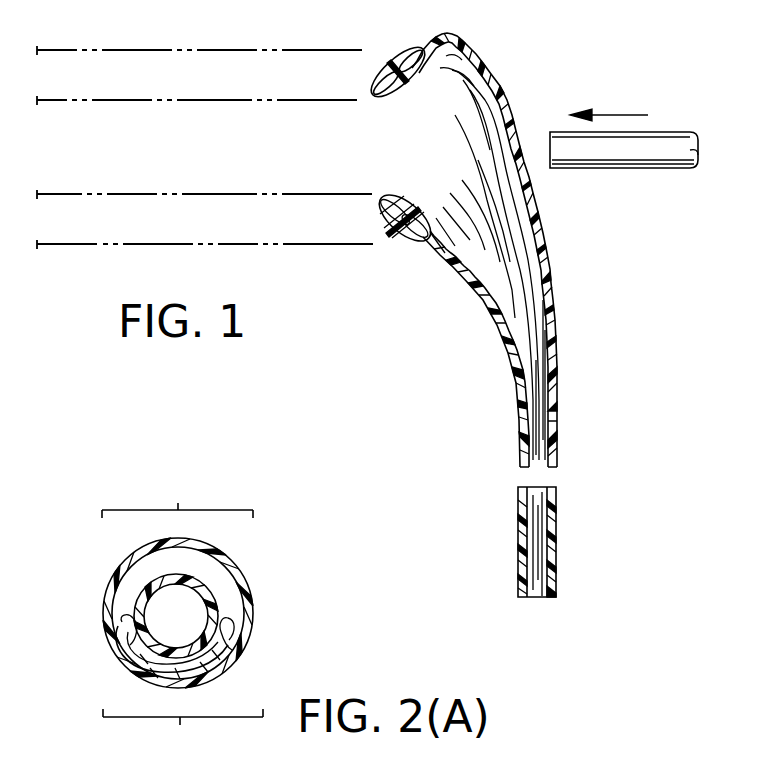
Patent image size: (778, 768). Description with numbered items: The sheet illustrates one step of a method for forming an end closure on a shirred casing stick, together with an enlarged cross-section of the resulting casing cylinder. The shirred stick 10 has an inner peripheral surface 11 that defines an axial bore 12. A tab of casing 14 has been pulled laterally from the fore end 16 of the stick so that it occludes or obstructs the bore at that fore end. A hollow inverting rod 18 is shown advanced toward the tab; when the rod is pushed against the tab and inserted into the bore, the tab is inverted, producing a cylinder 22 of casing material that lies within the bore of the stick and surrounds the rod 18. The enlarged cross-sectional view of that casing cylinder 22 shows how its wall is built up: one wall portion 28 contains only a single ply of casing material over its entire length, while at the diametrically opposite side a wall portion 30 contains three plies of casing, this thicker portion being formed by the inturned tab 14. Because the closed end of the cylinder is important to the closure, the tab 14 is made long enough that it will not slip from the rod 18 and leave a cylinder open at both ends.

In FIG. 1, the shirred stick 10 is at (128, 45).
In FIG. 1, the inner peripheral surface 11 is at (72, 194).
In FIG. 1, the axial bore 12 is at (385, 141).
In FIG. 1, the tab of casing 14 is at (548, 300).
In FIG. 1, the fore end 16 is at (408, 52).
In FIG. 1, the hollow inverting rod 18 is at (622, 168).
In FIG. 2A, the cylinder of casing material 22 is at (282, 562).
In FIG. 2A, the wall portion 28 is at (177, 495).
In FIG. 2A, the wall portion 30 is at (183, 734).